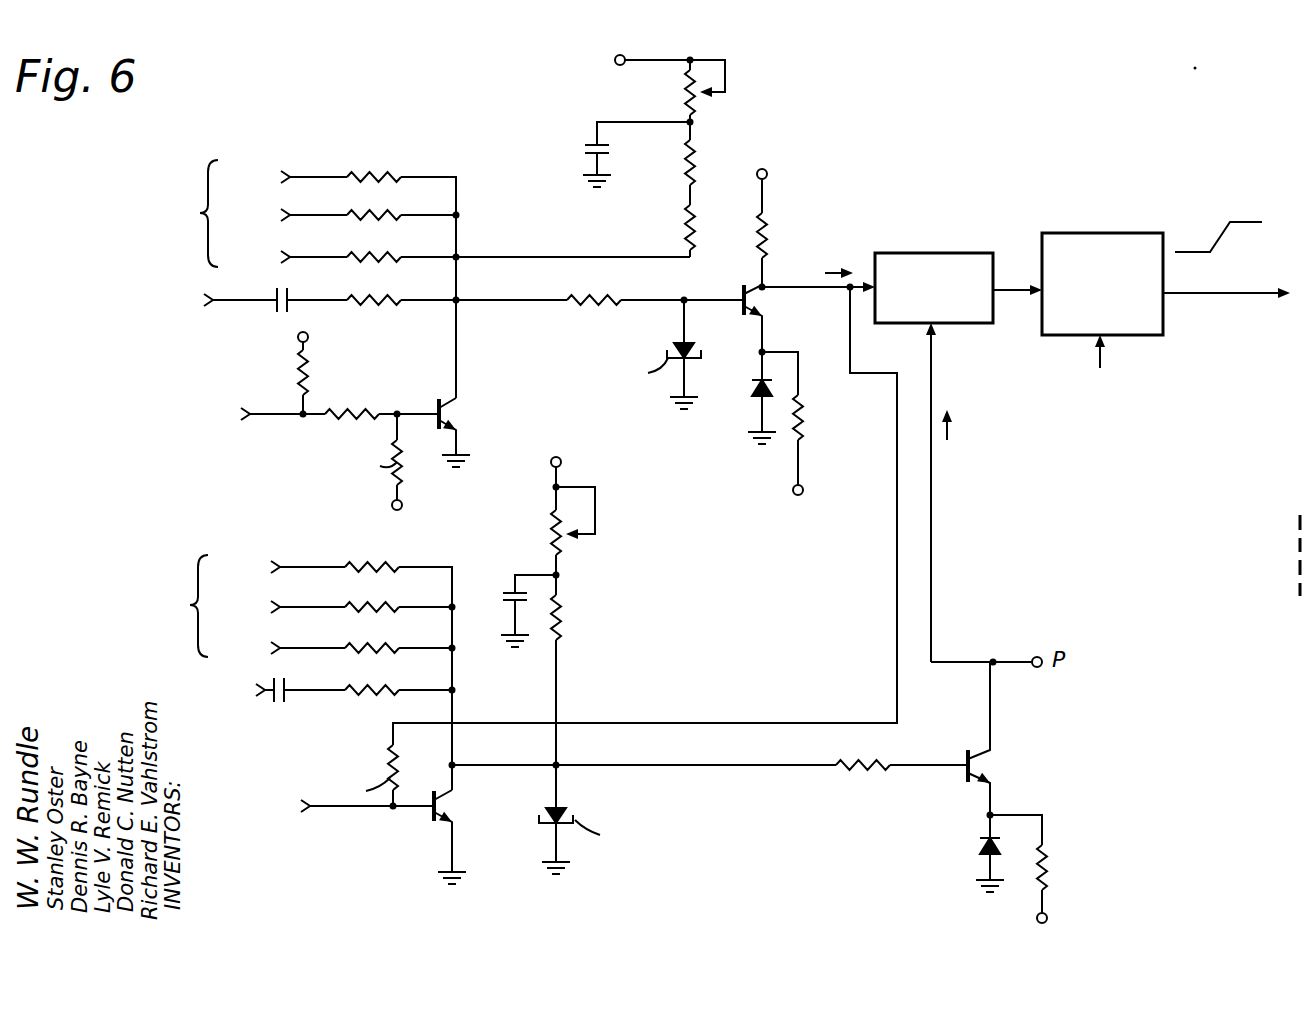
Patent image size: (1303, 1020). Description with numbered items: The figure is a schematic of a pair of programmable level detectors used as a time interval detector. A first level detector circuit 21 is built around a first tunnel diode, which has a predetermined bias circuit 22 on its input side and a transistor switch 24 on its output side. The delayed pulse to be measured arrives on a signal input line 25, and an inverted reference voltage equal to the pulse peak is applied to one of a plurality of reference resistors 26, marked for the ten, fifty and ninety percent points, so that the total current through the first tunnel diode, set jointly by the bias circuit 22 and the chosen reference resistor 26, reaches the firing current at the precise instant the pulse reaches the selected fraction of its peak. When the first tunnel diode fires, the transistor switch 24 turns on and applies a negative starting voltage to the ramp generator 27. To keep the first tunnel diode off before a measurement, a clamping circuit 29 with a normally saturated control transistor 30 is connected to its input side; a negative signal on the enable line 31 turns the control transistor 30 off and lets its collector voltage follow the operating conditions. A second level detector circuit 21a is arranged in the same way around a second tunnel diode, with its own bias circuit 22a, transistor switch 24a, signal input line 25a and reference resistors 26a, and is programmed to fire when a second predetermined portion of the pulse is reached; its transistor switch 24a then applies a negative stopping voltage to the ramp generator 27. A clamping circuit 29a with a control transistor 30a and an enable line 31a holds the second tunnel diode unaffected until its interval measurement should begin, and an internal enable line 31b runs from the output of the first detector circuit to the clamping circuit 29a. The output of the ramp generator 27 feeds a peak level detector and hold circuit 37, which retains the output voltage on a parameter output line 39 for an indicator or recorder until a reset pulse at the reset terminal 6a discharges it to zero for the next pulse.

The first level detector circuit 21 is at (135, 349).
The signal input line 25 is at (250, 302).
The reference resistors 26 is at (401, 215).
The bias circuit 22 is at (688, 193).
The transistor switch 24 is at (745, 287).
The control transistor 30 is at (437, 402).
The clamping circuit 29 is at (367, 437).
The enable line 31 is at (278, 416).
The ramp generator 27 is at (947, 253).
The peak level detector and hold circuit 37 is at (1107, 233).
The reset terminal 6a is at (1098, 356).
The parameter output line 39 is at (1188, 300).
The second level detector circuit 21a is at (170, 645).
The signal input line 25a is at (268, 702).
The reference resistors 26a is at (347, 648).
The bias circuit 22a is at (558, 682).
The internal enable line 31b is at (815, 723).
The control transistor 30a is at (432, 792).
The enable line 31a is at (362, 808).
The clamping circuit 29a is at (420, 836).
The transistor switch 24a is at (966, 785).